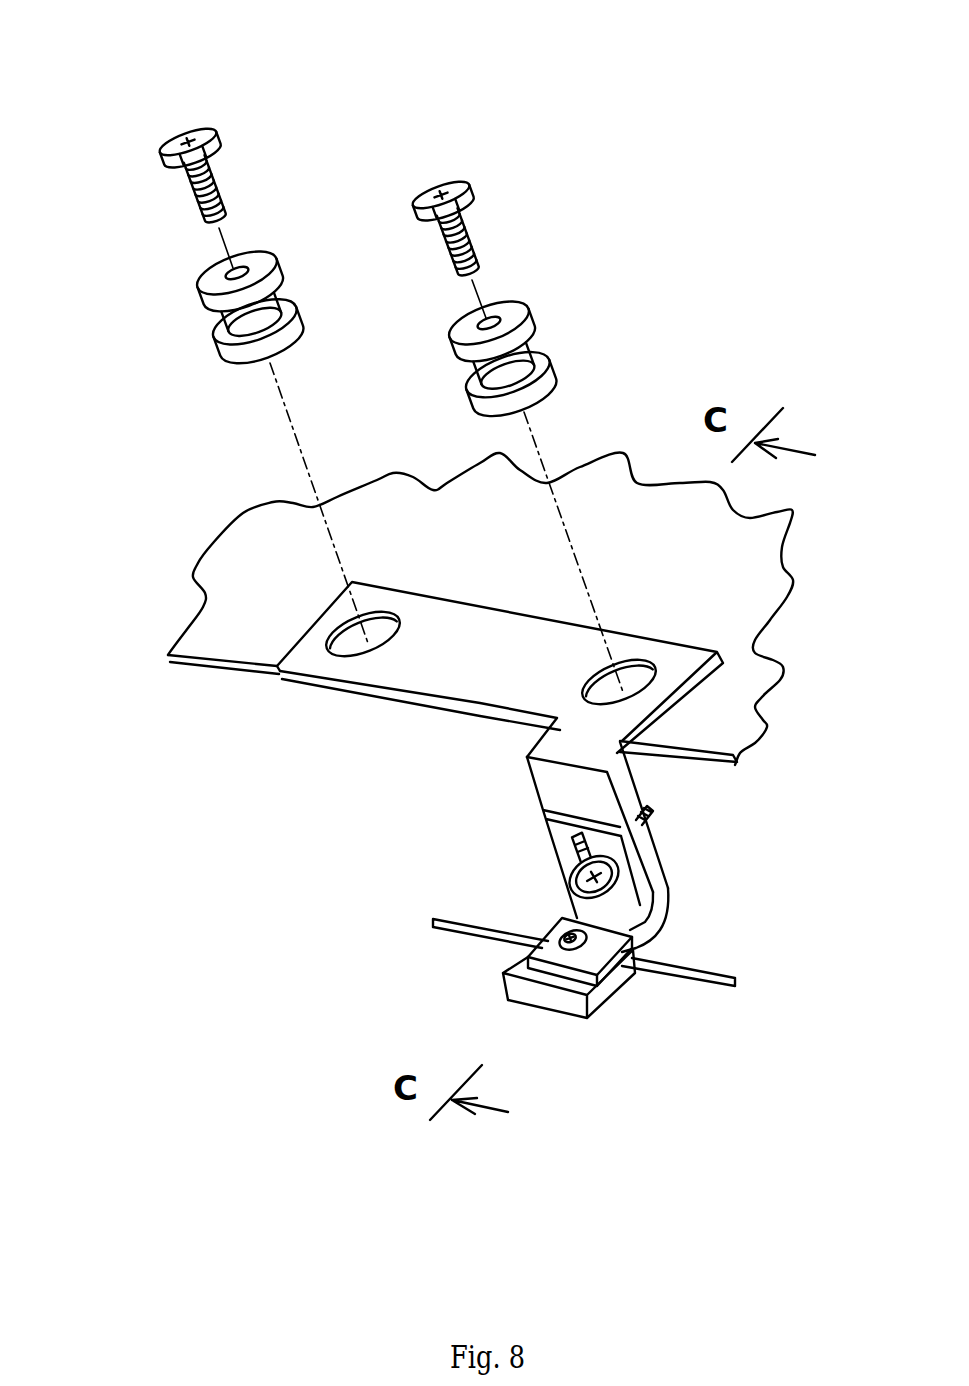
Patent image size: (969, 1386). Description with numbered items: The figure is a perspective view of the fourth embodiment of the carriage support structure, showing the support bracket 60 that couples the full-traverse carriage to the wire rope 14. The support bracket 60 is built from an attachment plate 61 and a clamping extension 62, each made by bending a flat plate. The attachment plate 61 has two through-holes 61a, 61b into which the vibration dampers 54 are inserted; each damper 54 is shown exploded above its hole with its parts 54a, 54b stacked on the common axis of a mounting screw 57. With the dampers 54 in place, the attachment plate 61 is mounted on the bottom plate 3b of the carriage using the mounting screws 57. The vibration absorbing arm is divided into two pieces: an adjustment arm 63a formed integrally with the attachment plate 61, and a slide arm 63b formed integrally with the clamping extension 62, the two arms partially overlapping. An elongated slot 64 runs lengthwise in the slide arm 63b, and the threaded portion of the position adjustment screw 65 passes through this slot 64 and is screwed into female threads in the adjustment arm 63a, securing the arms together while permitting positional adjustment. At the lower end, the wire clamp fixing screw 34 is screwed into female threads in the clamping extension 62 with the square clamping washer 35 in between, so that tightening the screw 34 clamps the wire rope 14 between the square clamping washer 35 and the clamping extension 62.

The bottom plate 3b is at (232, 640).
The wire rope 14 is at (440, 928).
The wire clamp fixing screw 34 is at (568, 937).
The square clamping washer 35 is at (573, 962).
The vibration damper 54 is at (371, 275).
The vibration damper part 54a is at (230, 318).
The vibration damper part 54b is at (197, 270).
The mounting screw 57 is at (195, 128).
The support bracket 60 is at (554, 688).
The attachment plate 61 is at (554, 718).
The through-hole 61a is at (643, 683).
The through-hole 61b is at (343, 648).
The clamping extension 62 is at (590, 997).
The adjustment arm 63a is at (665, 867).
The slide arm 63b is at (668, 897).
The elongated slot 64 is at (545, 822).
The position adjustment screw 65 is at (585, 876).